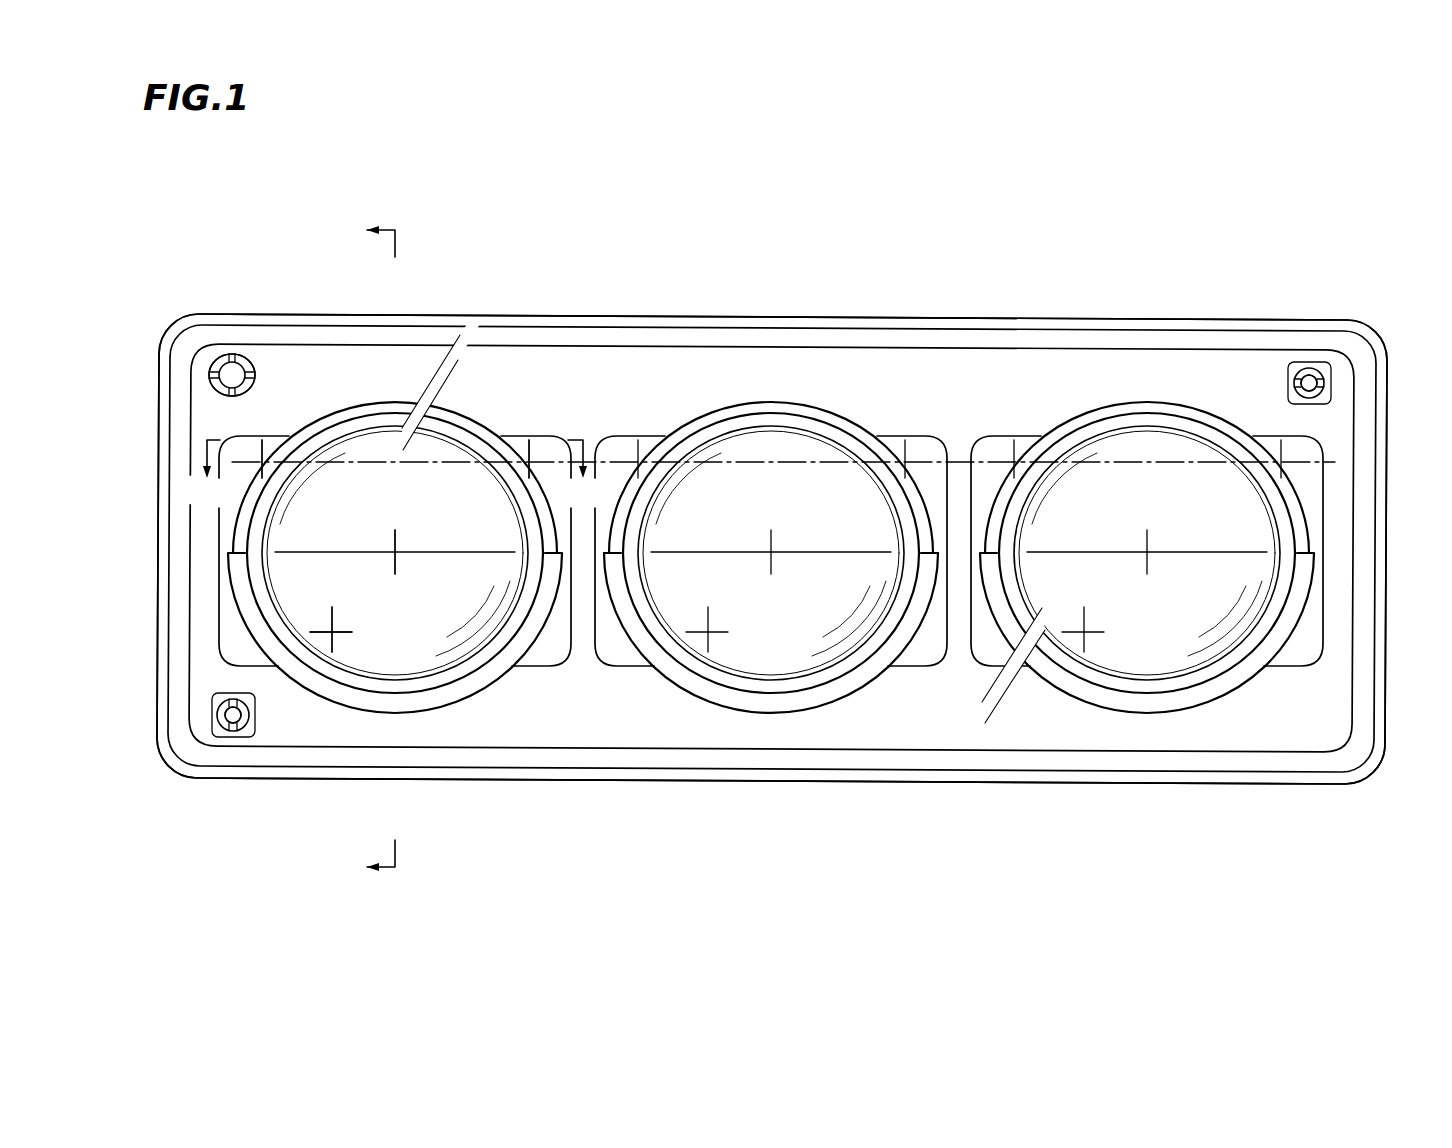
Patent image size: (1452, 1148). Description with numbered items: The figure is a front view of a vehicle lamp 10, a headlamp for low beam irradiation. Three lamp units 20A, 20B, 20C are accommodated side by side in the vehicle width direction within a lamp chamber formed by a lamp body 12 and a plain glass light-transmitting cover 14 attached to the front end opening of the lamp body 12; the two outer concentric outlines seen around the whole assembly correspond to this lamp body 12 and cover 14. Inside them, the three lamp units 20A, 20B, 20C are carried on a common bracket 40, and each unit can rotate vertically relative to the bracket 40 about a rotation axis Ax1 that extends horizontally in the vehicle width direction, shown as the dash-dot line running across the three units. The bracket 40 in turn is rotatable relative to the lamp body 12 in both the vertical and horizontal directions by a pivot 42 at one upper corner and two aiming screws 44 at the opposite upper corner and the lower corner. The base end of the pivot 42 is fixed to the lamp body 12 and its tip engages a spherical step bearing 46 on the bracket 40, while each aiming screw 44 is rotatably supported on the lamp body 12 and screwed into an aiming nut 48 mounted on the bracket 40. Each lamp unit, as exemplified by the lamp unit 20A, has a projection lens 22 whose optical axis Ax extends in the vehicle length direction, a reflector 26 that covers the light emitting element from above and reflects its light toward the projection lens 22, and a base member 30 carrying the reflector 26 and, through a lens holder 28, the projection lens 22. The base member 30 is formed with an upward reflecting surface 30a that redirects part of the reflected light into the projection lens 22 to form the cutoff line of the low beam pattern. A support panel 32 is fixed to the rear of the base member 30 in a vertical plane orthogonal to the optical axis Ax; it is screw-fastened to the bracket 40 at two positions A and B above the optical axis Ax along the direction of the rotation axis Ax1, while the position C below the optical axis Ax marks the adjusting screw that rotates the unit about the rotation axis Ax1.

The vehicle lamp 10 is at (1176, 234).
The lamp body 12 is at (1160, 790).
The light-transmitting cover 14 is at (772, 549).
The lamp unit 20A is at (476, 388).
The lamp unit 20B is at (852, 390).
The lamp unit 20C is at (1228, 388).
The projection lens 22 is at (750, 412).
The reflector 26 is at (905, 488).
The lens holder 28 is at (797, 400).
The base member 30 is at (792, 714).
The upward reflecting surface 30a is at (782, 551).
The support panel 32 is at (912, 668).
The bracket 40 is at (650, 750).
The pivot 42 is at (240, 372).
The aiming screw 44 is at (1313, 374).
The spherical step bearing 46 is at (216, 366).
The aiming nut 48 is at (1317, 393).
The optical axis Ax is at (768, 548).
The rotation axis Ax1 is at (387, 465).
The screw fastening position A is at (258, 462).
The screw fastening position B is at (531, 462).
The adjusting screw position C is at (334, 631).